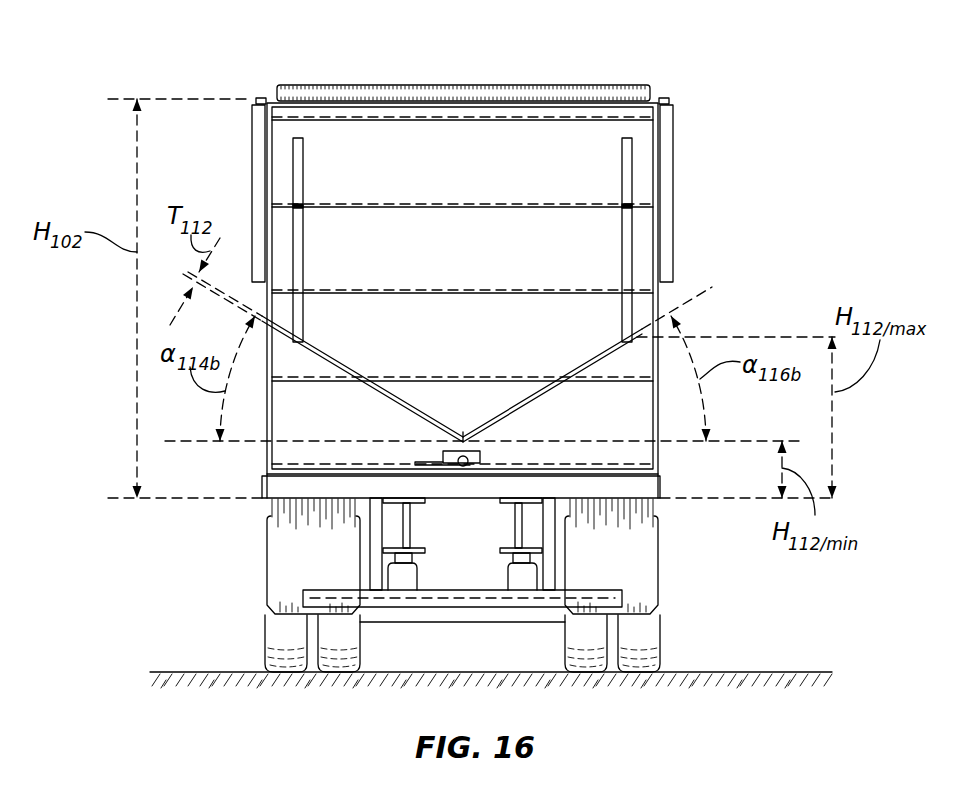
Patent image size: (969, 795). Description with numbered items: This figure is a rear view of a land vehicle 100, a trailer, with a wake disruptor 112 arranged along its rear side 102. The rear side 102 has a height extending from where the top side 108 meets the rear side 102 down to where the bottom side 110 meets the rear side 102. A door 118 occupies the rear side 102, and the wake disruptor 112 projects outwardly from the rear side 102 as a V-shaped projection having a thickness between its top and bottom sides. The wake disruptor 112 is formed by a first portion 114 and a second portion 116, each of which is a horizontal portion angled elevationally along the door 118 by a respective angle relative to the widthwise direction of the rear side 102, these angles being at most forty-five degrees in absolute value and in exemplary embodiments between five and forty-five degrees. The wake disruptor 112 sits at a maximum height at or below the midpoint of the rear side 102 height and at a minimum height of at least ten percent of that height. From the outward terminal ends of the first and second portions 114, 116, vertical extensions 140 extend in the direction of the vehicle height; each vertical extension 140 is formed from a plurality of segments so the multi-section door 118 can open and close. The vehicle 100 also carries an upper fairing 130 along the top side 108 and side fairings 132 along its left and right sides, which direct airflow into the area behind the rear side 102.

The land vehicle 100 is at (754, 63).
The rear side 102 is at (655, 490).
The top side 108 is at (656, 99).
The bottom side 110 is at (637, 499).
The wake disruptor 112 is at (496, 405).
The first portion 114 is at (343, 361).
The second portion 116 is at (588, 362).
The door 118 is at (541, 130).
The upper fairing 130 is at (300, 84).
The side fairing 132 is at (254, 197).
The vertical extension 140 is at (304, 222).